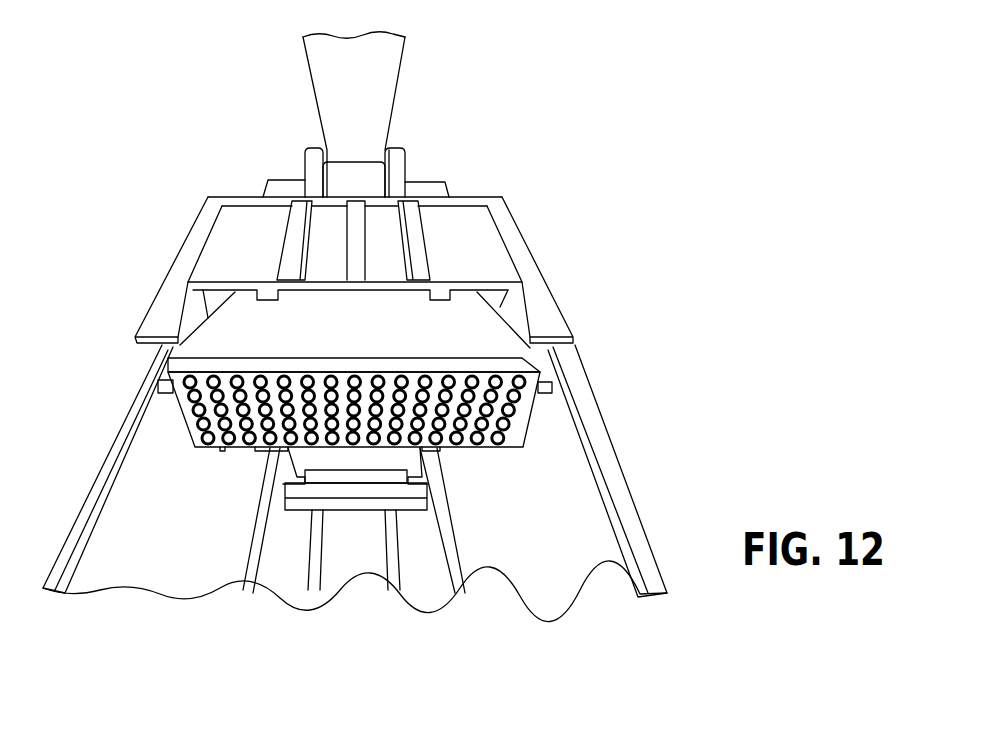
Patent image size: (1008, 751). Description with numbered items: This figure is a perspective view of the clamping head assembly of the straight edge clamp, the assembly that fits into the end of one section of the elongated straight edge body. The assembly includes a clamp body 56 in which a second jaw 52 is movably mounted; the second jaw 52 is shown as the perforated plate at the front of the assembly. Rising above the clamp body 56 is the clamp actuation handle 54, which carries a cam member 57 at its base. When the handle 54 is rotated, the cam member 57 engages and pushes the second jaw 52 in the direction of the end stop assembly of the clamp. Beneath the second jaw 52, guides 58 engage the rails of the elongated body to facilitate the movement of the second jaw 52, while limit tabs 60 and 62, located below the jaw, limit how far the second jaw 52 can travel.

The second jaw 52 is at (228, 437).
The clamp actuation handle 54 is at (322, 63).
The clamp body 56 is at (523, 240).
The cam member 57 is at (313, 168).
The guides 58 is at (437, 452).
The limit tab 60 is at (420, 477).
The limit tab 62 is at (285, 490).